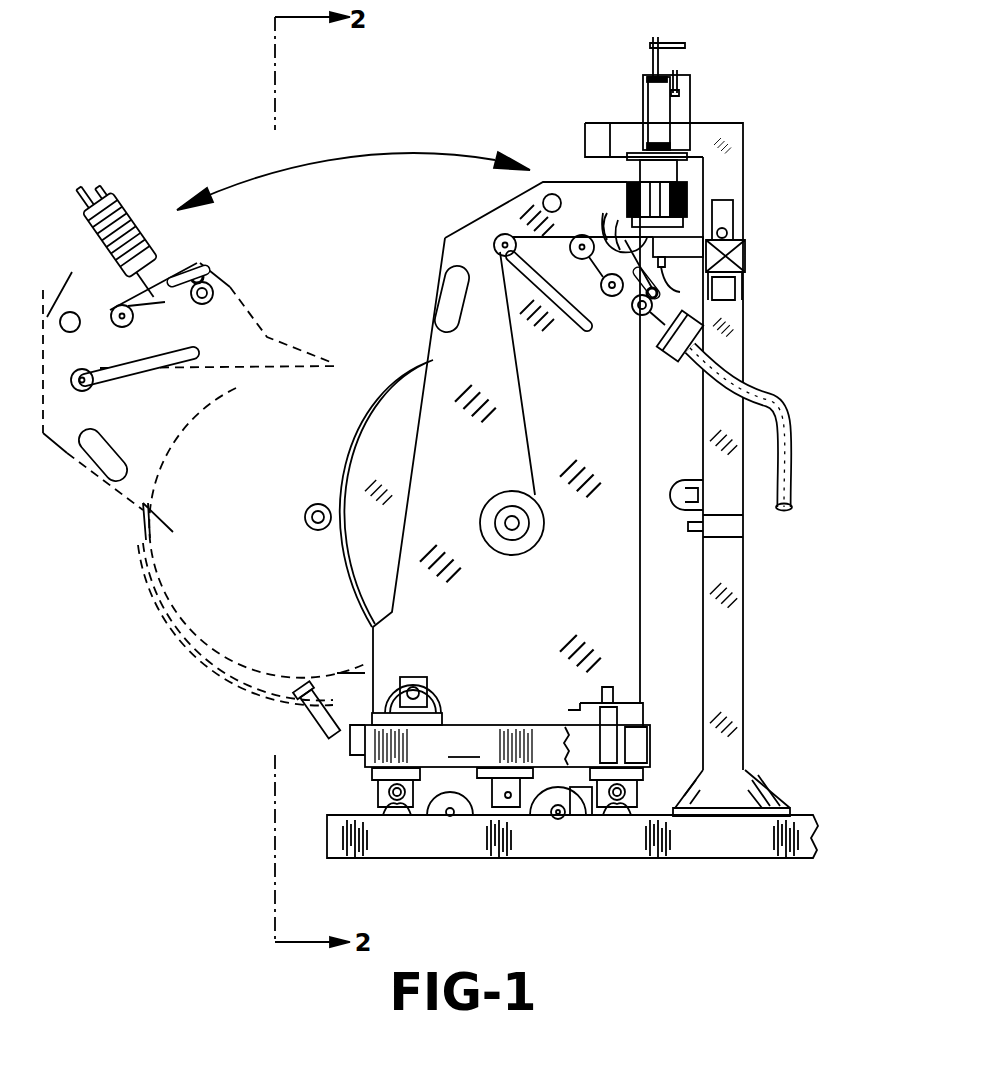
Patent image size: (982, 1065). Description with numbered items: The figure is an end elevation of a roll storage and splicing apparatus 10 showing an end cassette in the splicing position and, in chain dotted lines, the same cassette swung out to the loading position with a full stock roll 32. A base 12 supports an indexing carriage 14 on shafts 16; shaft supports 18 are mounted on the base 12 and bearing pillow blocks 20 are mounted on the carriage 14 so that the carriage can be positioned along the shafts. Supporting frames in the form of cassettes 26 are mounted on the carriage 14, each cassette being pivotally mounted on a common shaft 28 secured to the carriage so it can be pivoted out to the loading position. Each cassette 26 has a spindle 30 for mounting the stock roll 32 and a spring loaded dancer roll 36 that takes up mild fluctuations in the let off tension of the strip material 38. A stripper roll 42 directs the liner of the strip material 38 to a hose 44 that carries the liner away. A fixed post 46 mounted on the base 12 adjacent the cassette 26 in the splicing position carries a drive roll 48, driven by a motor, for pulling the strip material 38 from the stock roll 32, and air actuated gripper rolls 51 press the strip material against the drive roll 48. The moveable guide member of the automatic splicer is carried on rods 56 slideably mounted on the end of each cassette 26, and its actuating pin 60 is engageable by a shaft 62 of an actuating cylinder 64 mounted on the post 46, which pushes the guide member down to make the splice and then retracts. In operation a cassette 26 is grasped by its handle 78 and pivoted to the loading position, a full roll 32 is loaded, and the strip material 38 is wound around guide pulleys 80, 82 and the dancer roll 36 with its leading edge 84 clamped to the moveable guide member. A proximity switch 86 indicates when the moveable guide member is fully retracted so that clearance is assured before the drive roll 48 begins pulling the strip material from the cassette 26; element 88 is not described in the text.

The storage and splicing apparatus 10 is at (728, 55).
The base 12 is at (748, 832).
The indexing carriage 14 is at (493, 746).
The shafts 16 is at (408, 800).
The shaft supports 18 is at (397, 812).
The bearing pillow blocks 20 is at (388, 792).
The cassettes 26 is at (460, 242).
The common shaft 28 is at (420, 693).
The spindle 30 is at (502, 516).
The stock roll 32 is at (537, 545).
The spring loaded dancer roll 36 is at (505, 235).
The strip material 38 is at (523, 398).
The stripper roll 42 is at (643, 316).
The hose 44 is at (770, 396).
The fixed post 46 is at (732, 686).
The drive roll 48 is at (733, 240).
The gripper rolls 51 is at (708, 243).
The rods 56 is at (630, 173).
The actuating pin 60 is at (673, 190).
The shaft 62 is at (657, 130).
The actuating cylinder 64 is at (652, 103).
The handle 78 is at (453, 300).
The guide pulley 80 is at (582, 235).
The guide pulley 82 is at (611, 297).
The leading edge 84 is at (614, 250).
The proximity switch 86 is at (672, 163).
The pivot arm 88 is at (187, 403).